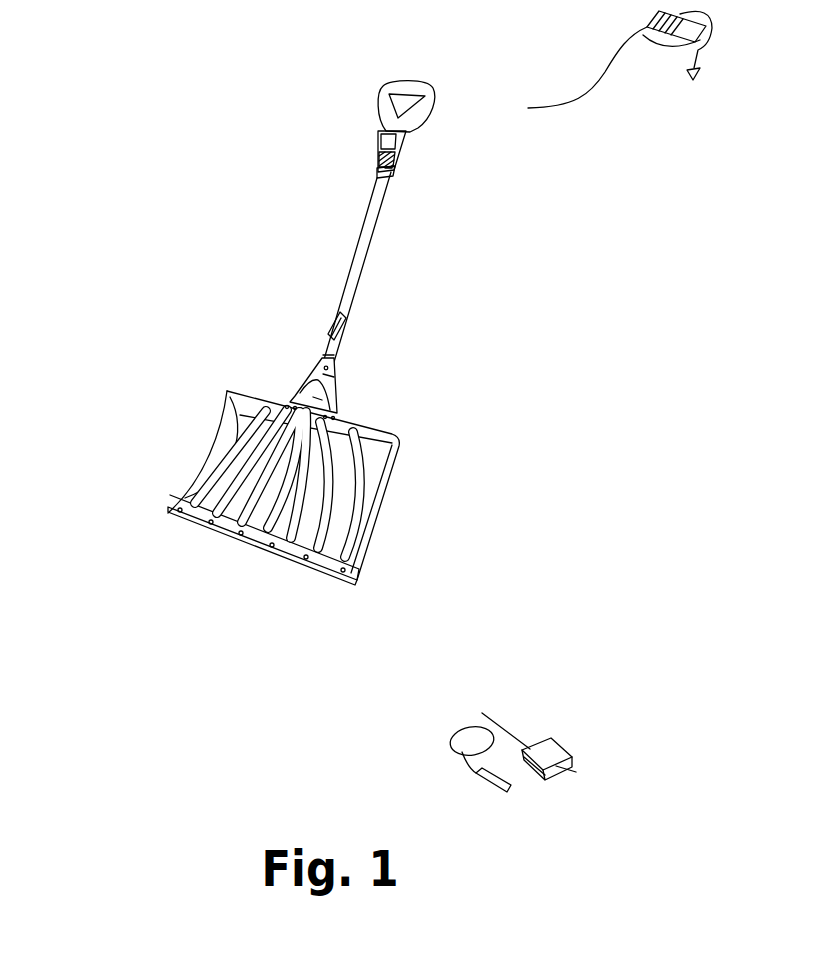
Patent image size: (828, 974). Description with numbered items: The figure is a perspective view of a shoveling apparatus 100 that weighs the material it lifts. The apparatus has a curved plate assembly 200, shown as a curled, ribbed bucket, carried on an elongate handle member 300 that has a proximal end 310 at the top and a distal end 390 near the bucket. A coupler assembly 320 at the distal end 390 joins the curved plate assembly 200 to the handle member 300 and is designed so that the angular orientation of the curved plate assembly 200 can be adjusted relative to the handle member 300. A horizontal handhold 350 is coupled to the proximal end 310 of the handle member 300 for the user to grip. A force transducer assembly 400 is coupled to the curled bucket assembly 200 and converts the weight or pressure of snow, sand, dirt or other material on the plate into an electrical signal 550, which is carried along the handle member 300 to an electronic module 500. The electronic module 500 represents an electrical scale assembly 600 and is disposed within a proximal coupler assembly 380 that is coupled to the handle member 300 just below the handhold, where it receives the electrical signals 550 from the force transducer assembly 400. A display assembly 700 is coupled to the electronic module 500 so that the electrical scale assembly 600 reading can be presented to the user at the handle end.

The shoveling apparatus 100 is at (64, 326).
The curved plate assembly 200 is at (350, 488).
The elongate handle member 300 is at (357, 255).
The proximal end 310 is at (320, 364).
The coupler assembly 320 is at (335, 376).
The horizontal handhold 350 is at (410, 82).
The proximal coupler assembly 380 is at (377, 163).
The distal end 390 is at (377, 173).
The force transducer assembly 400 is at (313, 394).
The electronic module 500 is at (390, 167).
The electrical signal 550 is at (332, 327).
The electrical scale assembly 600 is at (412, 147).
The display assembly 700 is at (380, 133).